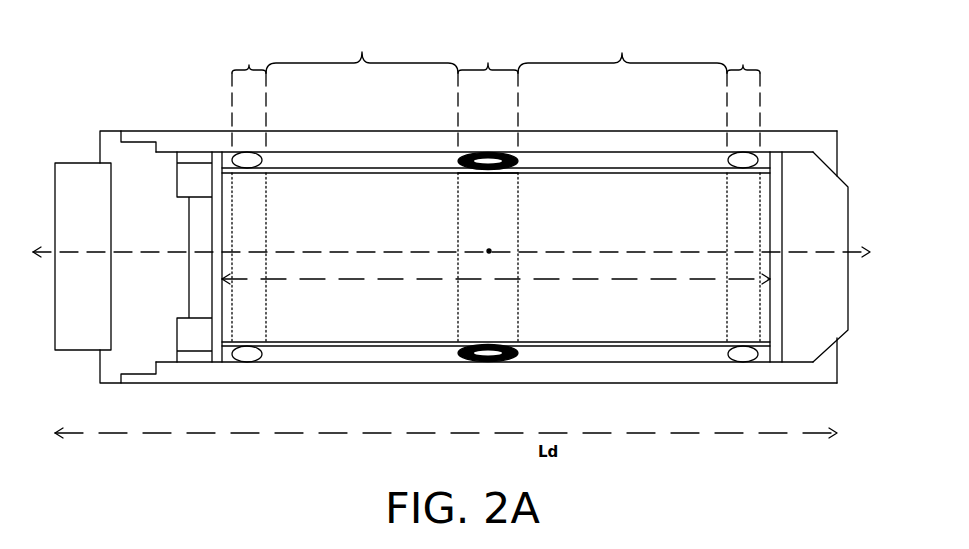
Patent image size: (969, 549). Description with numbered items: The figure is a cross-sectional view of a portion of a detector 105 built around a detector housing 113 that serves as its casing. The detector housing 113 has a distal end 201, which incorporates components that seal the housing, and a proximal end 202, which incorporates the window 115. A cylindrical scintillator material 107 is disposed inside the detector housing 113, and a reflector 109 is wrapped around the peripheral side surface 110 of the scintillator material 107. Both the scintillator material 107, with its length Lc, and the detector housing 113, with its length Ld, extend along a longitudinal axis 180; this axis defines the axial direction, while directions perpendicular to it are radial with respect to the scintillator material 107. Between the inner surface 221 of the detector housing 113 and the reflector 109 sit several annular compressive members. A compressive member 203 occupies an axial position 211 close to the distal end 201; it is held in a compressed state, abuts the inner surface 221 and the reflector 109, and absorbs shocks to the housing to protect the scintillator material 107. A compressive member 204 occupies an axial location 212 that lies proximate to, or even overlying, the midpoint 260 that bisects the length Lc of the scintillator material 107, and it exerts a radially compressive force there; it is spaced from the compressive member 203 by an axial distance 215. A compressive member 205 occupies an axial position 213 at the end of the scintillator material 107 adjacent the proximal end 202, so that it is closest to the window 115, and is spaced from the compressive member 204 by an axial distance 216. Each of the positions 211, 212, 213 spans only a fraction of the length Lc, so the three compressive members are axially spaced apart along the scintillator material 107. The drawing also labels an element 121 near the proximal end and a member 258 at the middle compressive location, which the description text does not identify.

The detector 105 is at (138, 189).
The distal end 201 is at (109, 105).
The proximal end 202 is at (834, 122).
The detector housing 113 is at (825, 148).
The window 115 is at (825, 193).
The end wall 121 is at (762, 131).
The longitudinal axis 180 is at (810, 252).
The scintillator material 107 is at (632, 222).
The reflector 109 is at (348, 172).
The peripheral side surface 110 is at (657, 175).
The inner surface 221 is at (583, 360).
The compressive member 203 is at (243, 158).
The compressive member 205 is at (748, 160).
The ring element 258 is at (500, 152).
The compressive member 204 is at (498, 168).
The midpoint 260 is at (489, 251).
The axial position 211 is at (250, 193).
The axial location 212 is at (488, 193).
The axial position 213 is at (745, 190).
The axial distance 215 is at (362, 49).
The axial distance 216 is at (622, 49).